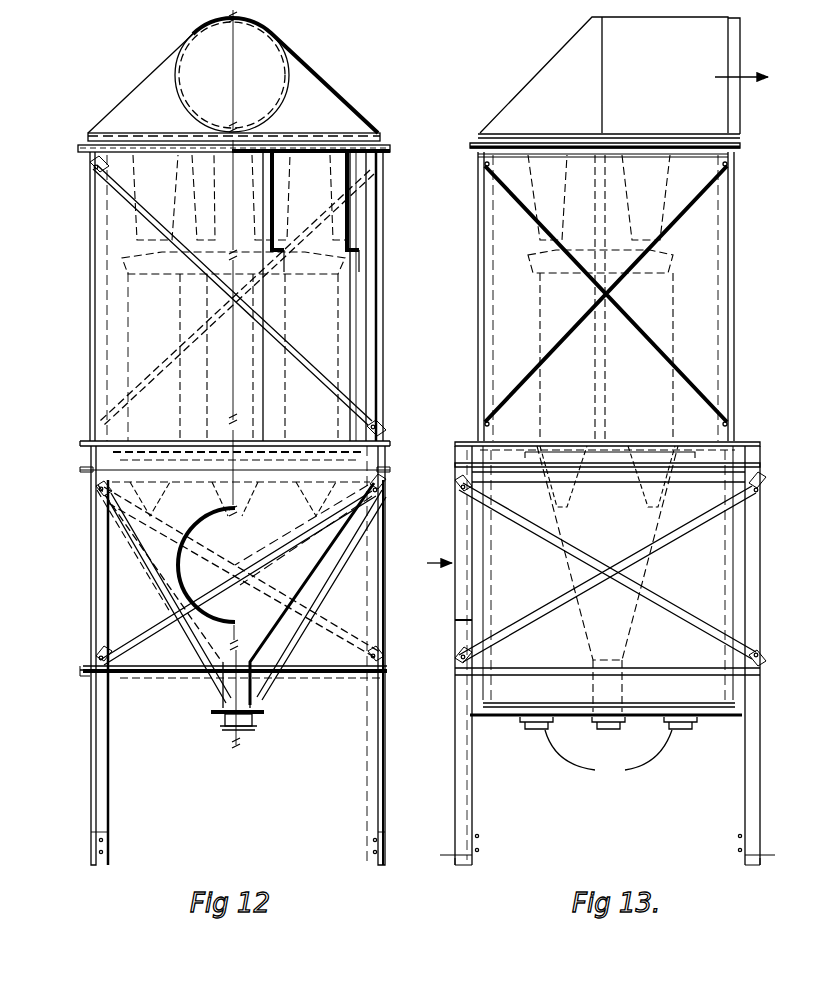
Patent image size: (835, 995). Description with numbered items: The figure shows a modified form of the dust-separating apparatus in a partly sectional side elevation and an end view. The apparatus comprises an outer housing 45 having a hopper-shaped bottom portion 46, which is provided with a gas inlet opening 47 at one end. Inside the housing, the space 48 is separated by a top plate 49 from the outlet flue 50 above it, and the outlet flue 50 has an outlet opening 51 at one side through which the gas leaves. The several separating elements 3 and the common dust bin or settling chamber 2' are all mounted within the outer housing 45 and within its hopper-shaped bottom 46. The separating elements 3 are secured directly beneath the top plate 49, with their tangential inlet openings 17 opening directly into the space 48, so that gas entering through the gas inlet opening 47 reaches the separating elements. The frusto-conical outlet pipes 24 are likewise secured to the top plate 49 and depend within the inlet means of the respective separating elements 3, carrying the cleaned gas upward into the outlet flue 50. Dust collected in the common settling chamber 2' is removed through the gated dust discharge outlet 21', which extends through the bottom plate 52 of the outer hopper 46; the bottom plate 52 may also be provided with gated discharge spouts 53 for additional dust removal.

In FIG. 12, the outlet opening 51 is at (286, 62).
In FIG. 13, the outlet opening 51 is at (740, 105).
In FIG. 12, the outlet flue 50 is at (312, 70).
In FIG. 13, the outlet flue 50 is at (612, 43).
In FIG. 12, the top plate 49 is at (357, 148).
In FIG. 12, the frusto-conical outlet pipes 24 is at (274, 194).
In FIG. 13, the frusto-conical outlet pipes 24 is at (540, 190).
In FIG. 12, the tangential inlet openings 17 is at (352, 221).
In FIG. 12, the space 48 is at (352, 318).
In FIG. 12, the separating elements 3 is at (342, 355).
In FIG. 13, the separating elements 3 is at (624, 294).
In FIG. 12, the outer housing 45 is at (112, 328).
In FIG. 12, the gas inlet opening 47 is at (204, 524).
In FIG. 13, the gas inlet opening 47 is at (480, 512).
In FIG. 12, the hopper-shaped bottom portion 46 is at (145, 573).
In FIG. 13, the hopper-shaped bottom portion 46 is at (715, 577).
In FIG. 12, the common dust bin or settling chamber 2' is at (292, 545).
In FIG. 12, the gated dust discharge outlet 21' is at (284, 617).
In FIG. 12, the bottom plate 52 is at (250, 728).
In FIG. 13, the bottom plate 52 is at (712, 716).
In FIG. 13, the gated discharge spouts 53 is at (608, 754).